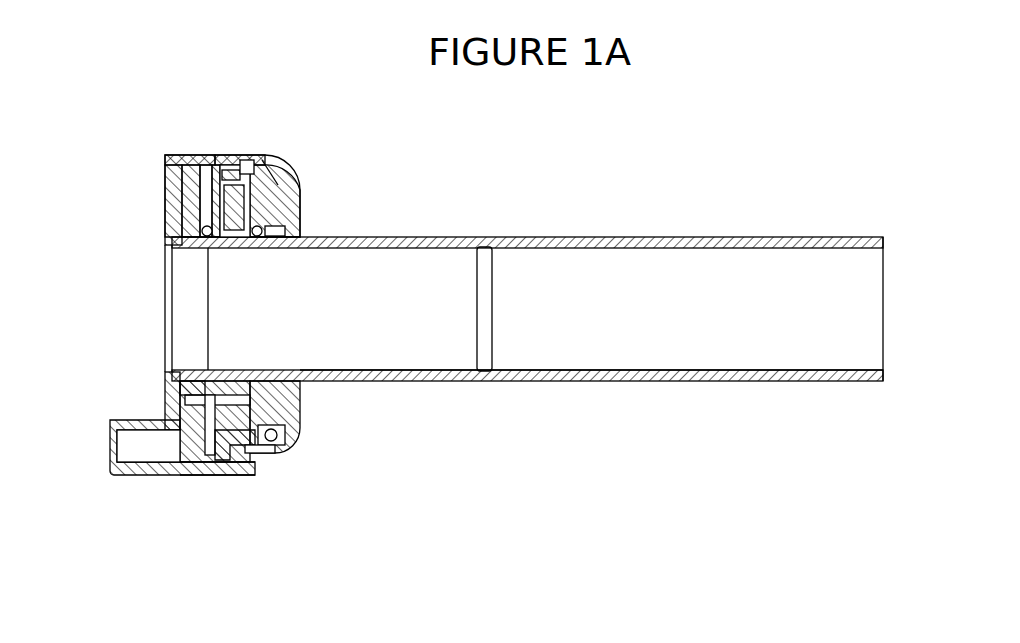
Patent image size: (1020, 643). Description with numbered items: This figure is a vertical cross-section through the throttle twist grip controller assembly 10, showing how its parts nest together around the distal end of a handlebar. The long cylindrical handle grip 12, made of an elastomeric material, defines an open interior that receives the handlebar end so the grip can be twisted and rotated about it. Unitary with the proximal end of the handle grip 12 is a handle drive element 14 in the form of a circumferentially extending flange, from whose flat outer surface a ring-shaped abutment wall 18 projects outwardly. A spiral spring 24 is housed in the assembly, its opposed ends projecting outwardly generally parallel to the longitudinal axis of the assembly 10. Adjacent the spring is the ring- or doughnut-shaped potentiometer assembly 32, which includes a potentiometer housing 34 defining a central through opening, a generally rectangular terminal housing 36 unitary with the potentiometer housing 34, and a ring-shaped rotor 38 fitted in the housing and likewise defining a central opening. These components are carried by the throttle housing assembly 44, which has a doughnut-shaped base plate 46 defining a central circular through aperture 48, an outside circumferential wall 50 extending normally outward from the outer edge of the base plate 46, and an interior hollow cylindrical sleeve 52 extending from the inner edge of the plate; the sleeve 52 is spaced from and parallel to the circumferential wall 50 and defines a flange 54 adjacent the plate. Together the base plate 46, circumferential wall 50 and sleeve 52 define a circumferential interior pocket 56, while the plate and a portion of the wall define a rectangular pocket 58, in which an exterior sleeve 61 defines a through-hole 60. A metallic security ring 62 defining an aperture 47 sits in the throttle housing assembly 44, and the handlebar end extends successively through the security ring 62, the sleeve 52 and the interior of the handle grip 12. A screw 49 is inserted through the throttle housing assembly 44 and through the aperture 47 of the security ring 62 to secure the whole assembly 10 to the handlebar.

The throttle twist grip controller assembly 10 is at (644, 178).
The handle grip 12 is at (743, 235).
The handle drive element 14 is at (302, 182).
The abutment wall 18 is at (241, 428).
The spiral spring 24 is at (295, 215).
The ring potentiometer assembly 32 is at (178, 447).
The potentiometer housing 34 is at (221, 168).
The terminal housing 36 is at (210, 473).
The rotor 38 is at (236, 160).
The throttle housing assembly 44 is at (198, 478).
The base plate 46 is at (168, 397).
The aperture 47 is at (165, 200).
The central through aperture 48 is at (193, 382).
The screw 49 is at (163, 177).
The outside circumferential wall 50 is at (248, 160).
The sleeve 52 is at (392, 377).
The flange 54 is at (245, 415).
The pocket 56 is at (283, 165).
The pocket 58 is at (255, 455).
The through-hole 60 is at (112, 452).
The exterior sleeve 61 is at (124, 472).
The security ring 62 is at (163, 372).